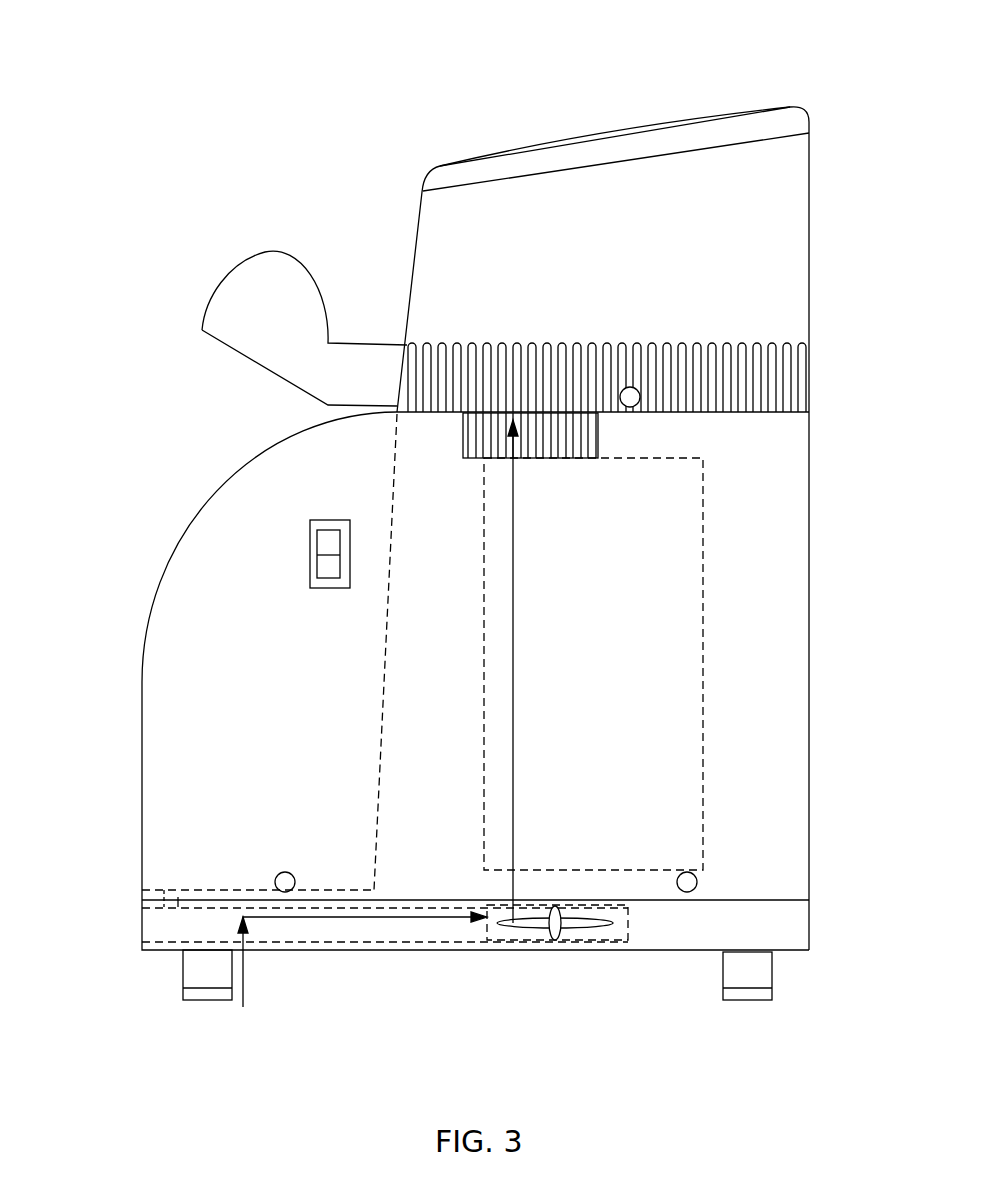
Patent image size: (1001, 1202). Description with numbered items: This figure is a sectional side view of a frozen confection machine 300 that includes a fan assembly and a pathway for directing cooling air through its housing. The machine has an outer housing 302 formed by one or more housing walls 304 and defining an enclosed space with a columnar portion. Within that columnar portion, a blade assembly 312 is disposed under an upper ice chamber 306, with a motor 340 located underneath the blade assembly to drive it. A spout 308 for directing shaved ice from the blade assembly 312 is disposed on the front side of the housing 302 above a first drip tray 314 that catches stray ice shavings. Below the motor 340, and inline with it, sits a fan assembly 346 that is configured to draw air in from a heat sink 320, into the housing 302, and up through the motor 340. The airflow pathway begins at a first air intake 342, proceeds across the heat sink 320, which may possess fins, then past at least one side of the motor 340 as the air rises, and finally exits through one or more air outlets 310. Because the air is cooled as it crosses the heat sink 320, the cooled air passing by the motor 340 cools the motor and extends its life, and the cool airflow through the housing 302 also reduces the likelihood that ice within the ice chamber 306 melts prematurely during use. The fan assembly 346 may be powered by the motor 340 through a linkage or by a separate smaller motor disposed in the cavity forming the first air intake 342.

The frozen confection machine 300 is at (172, 55).
The outer housing 302 is at (792, 470).
The housing walls 304 is at (770, 765).
The ice chamber 306 is at (452, 248).
The spout 308 is at (330, 373).
The air outlets 310 is at (463, 432).
The blade assembly 312 is at (760, 378).
The first drip tray 314 is at (220, 888).
The heat sink 320 is at (172, 927).
The motor 340 is at (637, 567).
The first air intake 342 is at (287, 953).
The fan assembly 346 is at (563, 933).